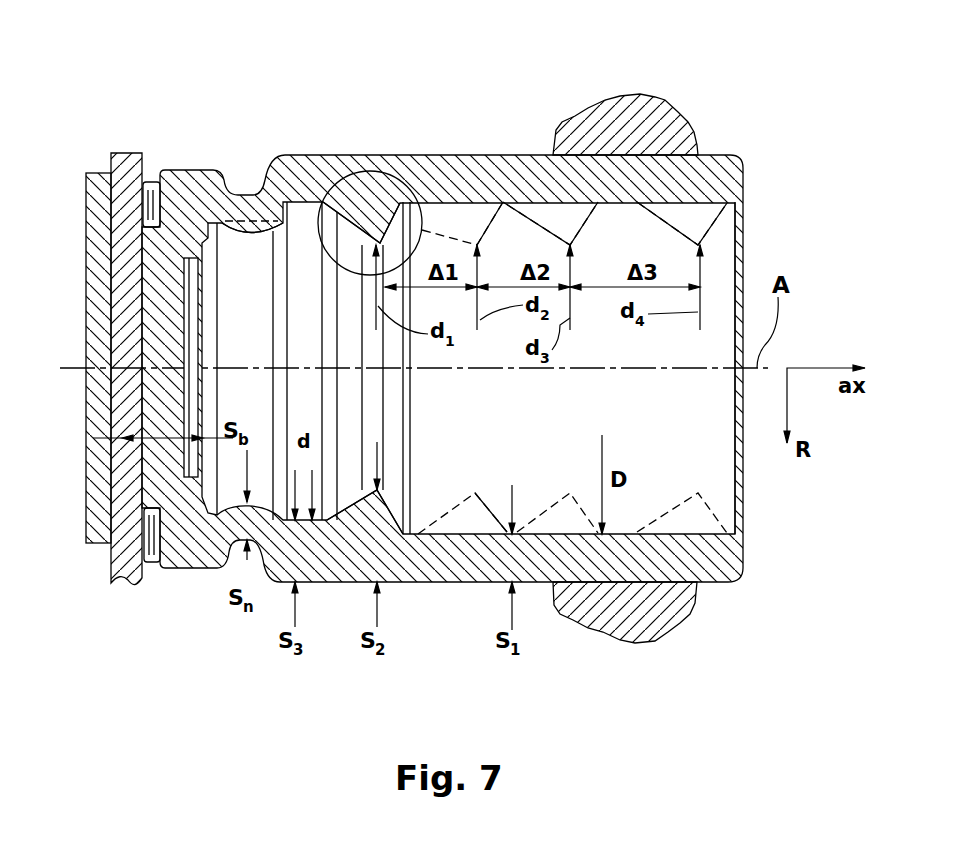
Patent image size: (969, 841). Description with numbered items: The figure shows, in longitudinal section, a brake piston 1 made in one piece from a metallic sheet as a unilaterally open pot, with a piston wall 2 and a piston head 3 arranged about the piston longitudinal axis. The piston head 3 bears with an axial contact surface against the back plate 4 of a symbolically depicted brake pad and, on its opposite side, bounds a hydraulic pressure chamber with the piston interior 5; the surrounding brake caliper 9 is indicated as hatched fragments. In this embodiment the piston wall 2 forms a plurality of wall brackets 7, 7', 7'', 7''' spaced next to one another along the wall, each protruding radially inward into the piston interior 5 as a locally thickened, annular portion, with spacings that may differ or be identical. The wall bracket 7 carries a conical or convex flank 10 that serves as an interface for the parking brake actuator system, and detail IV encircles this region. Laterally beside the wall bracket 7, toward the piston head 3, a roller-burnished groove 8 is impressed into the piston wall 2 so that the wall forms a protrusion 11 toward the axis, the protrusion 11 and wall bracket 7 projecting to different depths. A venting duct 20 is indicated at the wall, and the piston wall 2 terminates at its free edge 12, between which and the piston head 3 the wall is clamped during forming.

The brake piston 1 is at (186, 108).
The piston wall 2 is at (497, 178).
The piston head 3 is at (167, 293).
The back plate 4 is at (126, 152).
The piston interior 5 is at (634, 243).
The wall bracket 7 is at (361, 321).
The wall bracket 7' is at (476, 291).
The wall bracket 7'' is at (550, 146).
The wall bracket 7''' is at (695, 146).
The groove 8 is at (238, 174).
The brake caliper 9 is at (625, 118).
The flank 10 is at (428, 198).
The protrusion 11 is at (290, 218).
The edge 12 is at (745, 186).
The venting duct 20 is at (250, 190).
The detail section IV is at (366, 172).